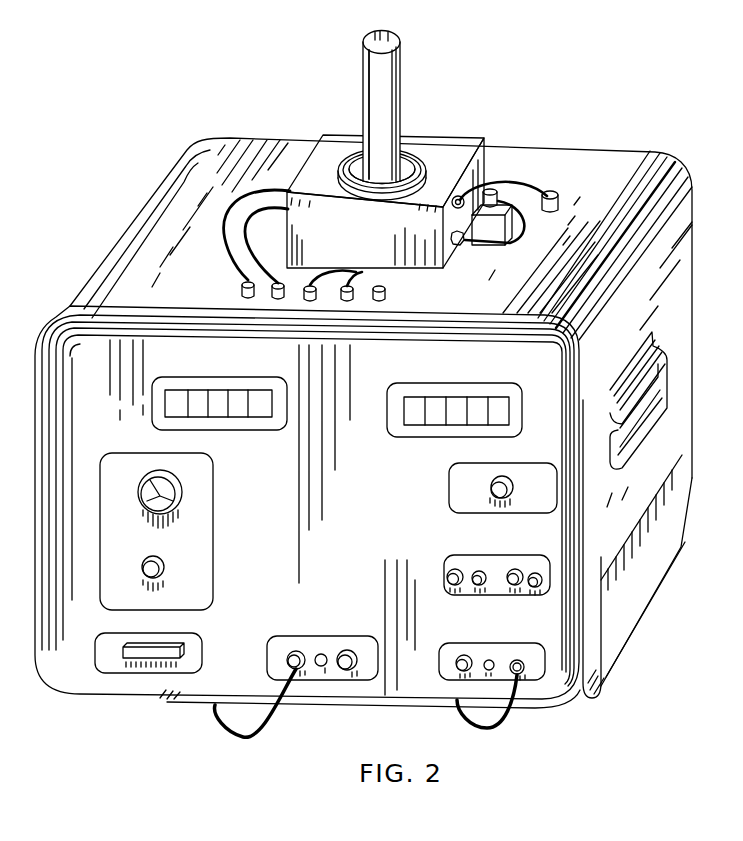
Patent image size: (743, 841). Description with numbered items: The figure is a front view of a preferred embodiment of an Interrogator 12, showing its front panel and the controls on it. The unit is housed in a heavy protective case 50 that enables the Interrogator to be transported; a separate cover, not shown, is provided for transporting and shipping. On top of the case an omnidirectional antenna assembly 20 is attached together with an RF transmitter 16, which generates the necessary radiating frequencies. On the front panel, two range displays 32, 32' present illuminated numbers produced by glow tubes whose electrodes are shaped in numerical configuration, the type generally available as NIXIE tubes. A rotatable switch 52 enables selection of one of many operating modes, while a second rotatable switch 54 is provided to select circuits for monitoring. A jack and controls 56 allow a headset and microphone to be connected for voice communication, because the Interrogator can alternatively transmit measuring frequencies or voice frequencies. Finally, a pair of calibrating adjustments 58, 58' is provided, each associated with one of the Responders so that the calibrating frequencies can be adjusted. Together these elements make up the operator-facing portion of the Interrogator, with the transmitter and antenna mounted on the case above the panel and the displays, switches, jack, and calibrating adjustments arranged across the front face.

The Interrogator 12 is at (694, 613).
The RF transmitter 16 is at (450, 137).
The omnidirectional antenna assembly 20 is at (401, 49).
The range display 32 is at (219, 392).
The range display 32' is at (454, 396).
The heavy protective case 50 is at (130, 225).
The rotatable switch 52 is at (504, 470).
The second rotatable switch 54 is at (157, 556).
The jack and controls 56 is at (353, 640).
The calibrating adjustment 58 is at (493, 563).
The calibrating adjustment 58' is at (524, 563).